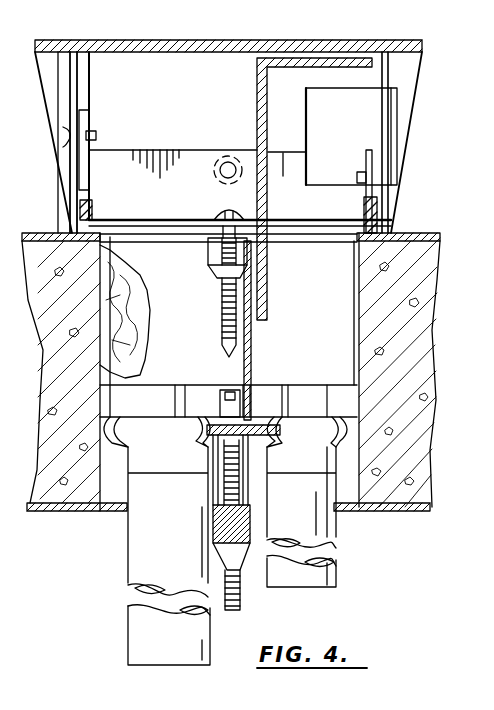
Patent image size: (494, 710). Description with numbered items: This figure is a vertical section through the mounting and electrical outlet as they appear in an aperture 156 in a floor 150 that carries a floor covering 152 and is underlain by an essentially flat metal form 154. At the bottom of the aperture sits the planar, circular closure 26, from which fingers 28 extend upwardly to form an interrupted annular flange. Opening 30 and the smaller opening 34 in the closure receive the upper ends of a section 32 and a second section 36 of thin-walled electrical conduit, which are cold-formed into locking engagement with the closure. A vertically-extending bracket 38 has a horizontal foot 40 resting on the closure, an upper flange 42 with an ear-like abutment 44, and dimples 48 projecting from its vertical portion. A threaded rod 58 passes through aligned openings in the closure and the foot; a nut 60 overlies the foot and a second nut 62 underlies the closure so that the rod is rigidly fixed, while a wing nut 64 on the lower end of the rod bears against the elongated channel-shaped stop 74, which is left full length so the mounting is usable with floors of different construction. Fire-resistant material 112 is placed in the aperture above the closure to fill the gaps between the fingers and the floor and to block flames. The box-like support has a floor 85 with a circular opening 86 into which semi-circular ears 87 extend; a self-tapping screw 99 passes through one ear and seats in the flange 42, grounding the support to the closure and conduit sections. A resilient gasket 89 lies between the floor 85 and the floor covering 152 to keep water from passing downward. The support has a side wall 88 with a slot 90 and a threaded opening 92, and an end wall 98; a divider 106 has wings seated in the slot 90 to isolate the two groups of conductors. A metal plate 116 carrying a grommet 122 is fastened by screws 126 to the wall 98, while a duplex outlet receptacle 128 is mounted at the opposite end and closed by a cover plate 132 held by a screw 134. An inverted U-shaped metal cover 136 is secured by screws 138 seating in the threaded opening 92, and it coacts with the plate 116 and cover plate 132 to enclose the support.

The closure 26 is at (257, 422).
The fingers 28 is at (130, 402).
The opening 30 is at (157, 470).
The section of electrical conduit 32 is at (137, 613).
The opening 34 is at (299, 473).
The second section of electrical conduit 36 is at (300, 543).
The bracket 38 is at (262, 334).
The foot 40 is at (222, 423).
The upper flange 42 is at (213, 270).
The ear-like abutment 44 is at (205, 223).
The dimples 48 is at (262, 293).
The threaded rod 58 is at (226, 604).
The nut 60 is at (227, 417).
The second nut 62 is at (215, 466).
The wing nut 64 is at (247, 568).
The elongated stop 74 is at (262, 554).
The floor 85 is at (98, 218).
The circular opening 86 is at (108, 233).
The semi-circular ears 87 is at (210, 219).
The side wall 88 is at (283, 163).
The resilient gasket 89 is at (391, 230).
The slot 90 is at (279, 177).
The threaded opening 92 is at (221, 162).
The wall 98 is at (89, 118).
The self-tapping screw 99 is at (228, 320).
The divider 106 is at (257, 87).
The fire-resistant material 112 is at (141, 319).
The metal plate 116 is at (75, 78).
The grommet 122 is at (63, 67).
The screws 126 is at (67, 147).
The duplex outlet receptacle 128 is at (372, 98).
The cover plate 132 is at (384, 72).
The screw 134 is at (373, 146).
The metal cover 136 is at (164, 20).
The screws 138 is at (223, 155).
The floor 150 is at (427, 329).
The floor covering 152 is at (45, 232).
The metal form 154 is at (407, 511).
The aperture 156 is at (344, 302).